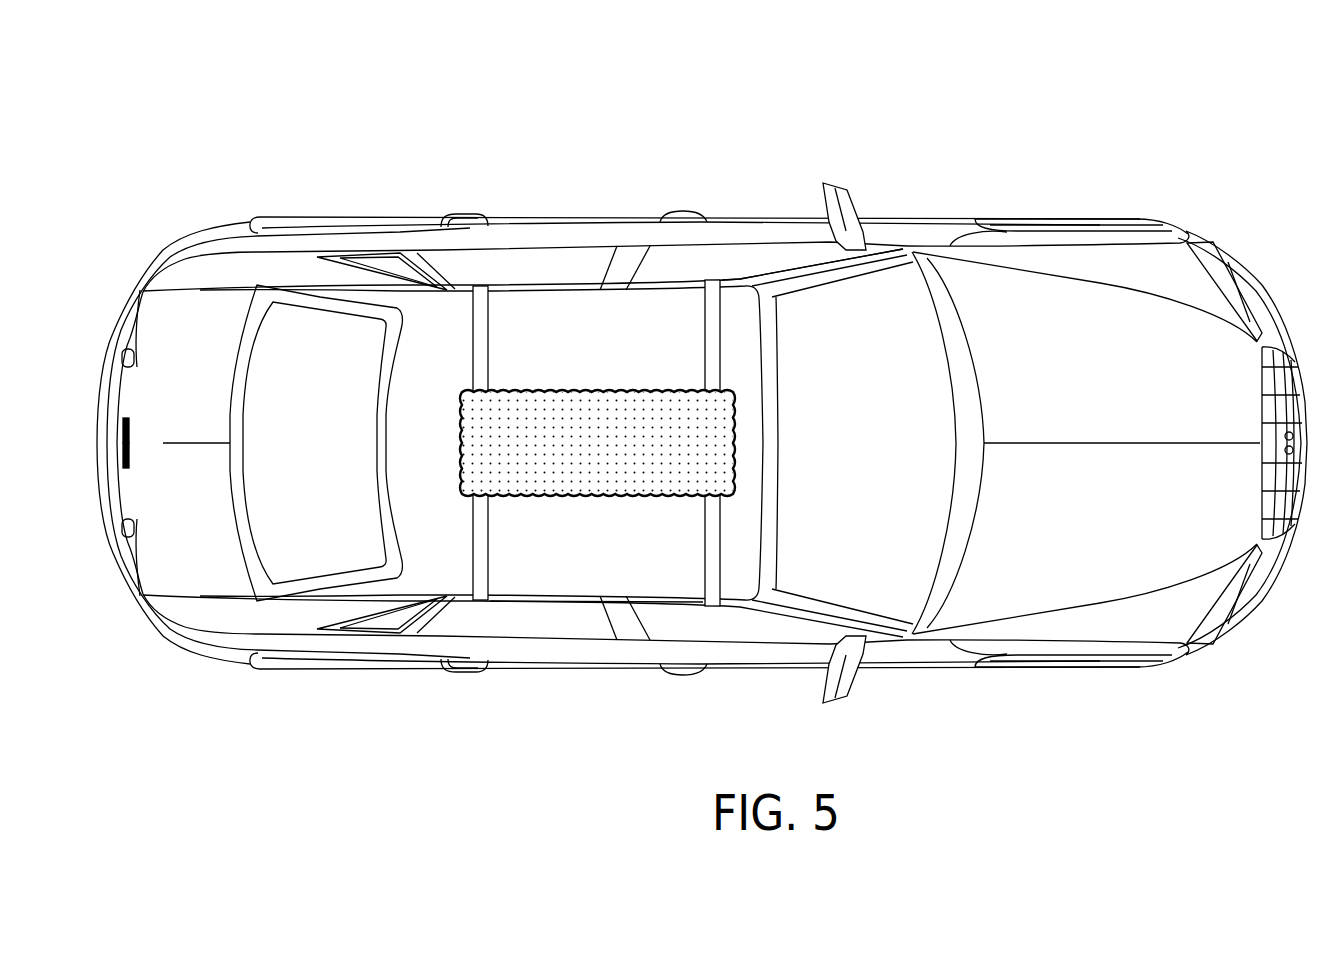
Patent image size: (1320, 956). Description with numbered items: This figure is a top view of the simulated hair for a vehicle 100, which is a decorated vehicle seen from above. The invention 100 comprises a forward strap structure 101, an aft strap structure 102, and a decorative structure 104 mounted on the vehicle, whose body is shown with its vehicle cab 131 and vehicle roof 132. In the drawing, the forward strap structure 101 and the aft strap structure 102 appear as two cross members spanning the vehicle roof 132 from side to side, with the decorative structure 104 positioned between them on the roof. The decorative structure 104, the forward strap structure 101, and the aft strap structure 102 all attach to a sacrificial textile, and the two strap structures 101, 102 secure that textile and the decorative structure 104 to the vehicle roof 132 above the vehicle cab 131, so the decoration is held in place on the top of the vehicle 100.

The simulated hair for a vehicle 100 is at (702, 374).
The forward strap structure 101 is at (713, 302).
The aft strap structure 102 is at (481, 313).
The decorative structure 104 is at (537, 420).
The vehicle cab 131 is at (738, 337).
The vehicle roof 132 is at (566, 612).